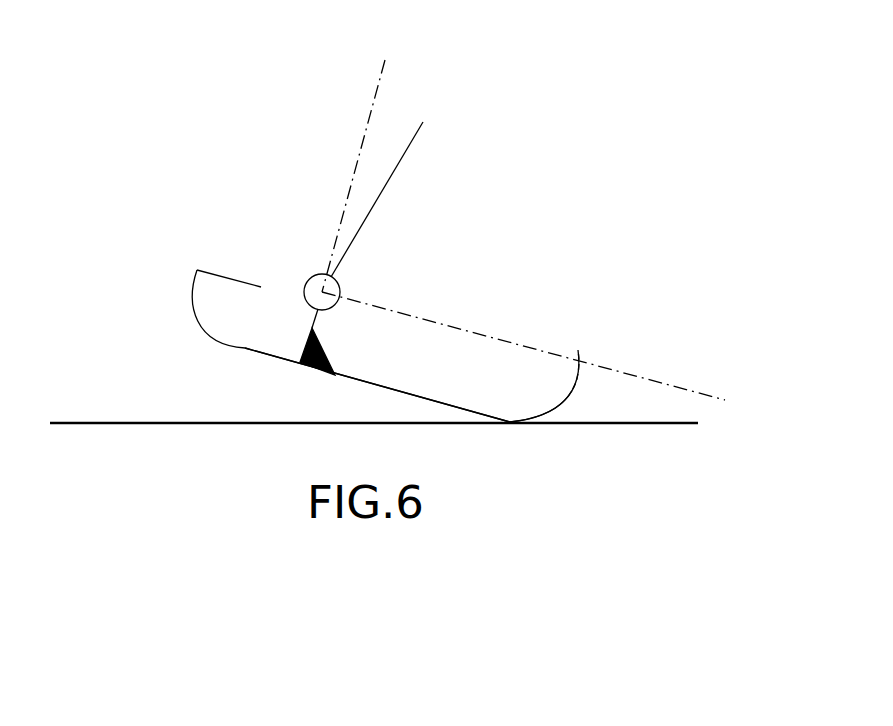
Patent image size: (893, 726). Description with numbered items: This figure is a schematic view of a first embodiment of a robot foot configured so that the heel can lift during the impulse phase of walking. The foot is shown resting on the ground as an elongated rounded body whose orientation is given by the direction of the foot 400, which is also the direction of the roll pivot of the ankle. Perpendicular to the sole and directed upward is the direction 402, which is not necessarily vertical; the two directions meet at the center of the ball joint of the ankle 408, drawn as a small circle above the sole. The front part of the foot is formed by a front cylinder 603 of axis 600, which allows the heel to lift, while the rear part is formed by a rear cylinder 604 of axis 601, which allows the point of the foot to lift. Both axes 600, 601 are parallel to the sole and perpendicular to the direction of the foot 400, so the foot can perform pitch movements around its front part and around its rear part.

The direction of the foot 400 is at (532, 346).
The direction perpendicular to the surface of the sole 402 is at (369, 159).
The center of the ball joint of the ankle 408 is at (317, 287).
The axis of the front cylinder 600 is at (517, 357).
The axis of the rear cylinder 601 is at (260, 288).
The front cylinder 603 is at (587, 342).
The rear cylinder 604 is at (199, 265).